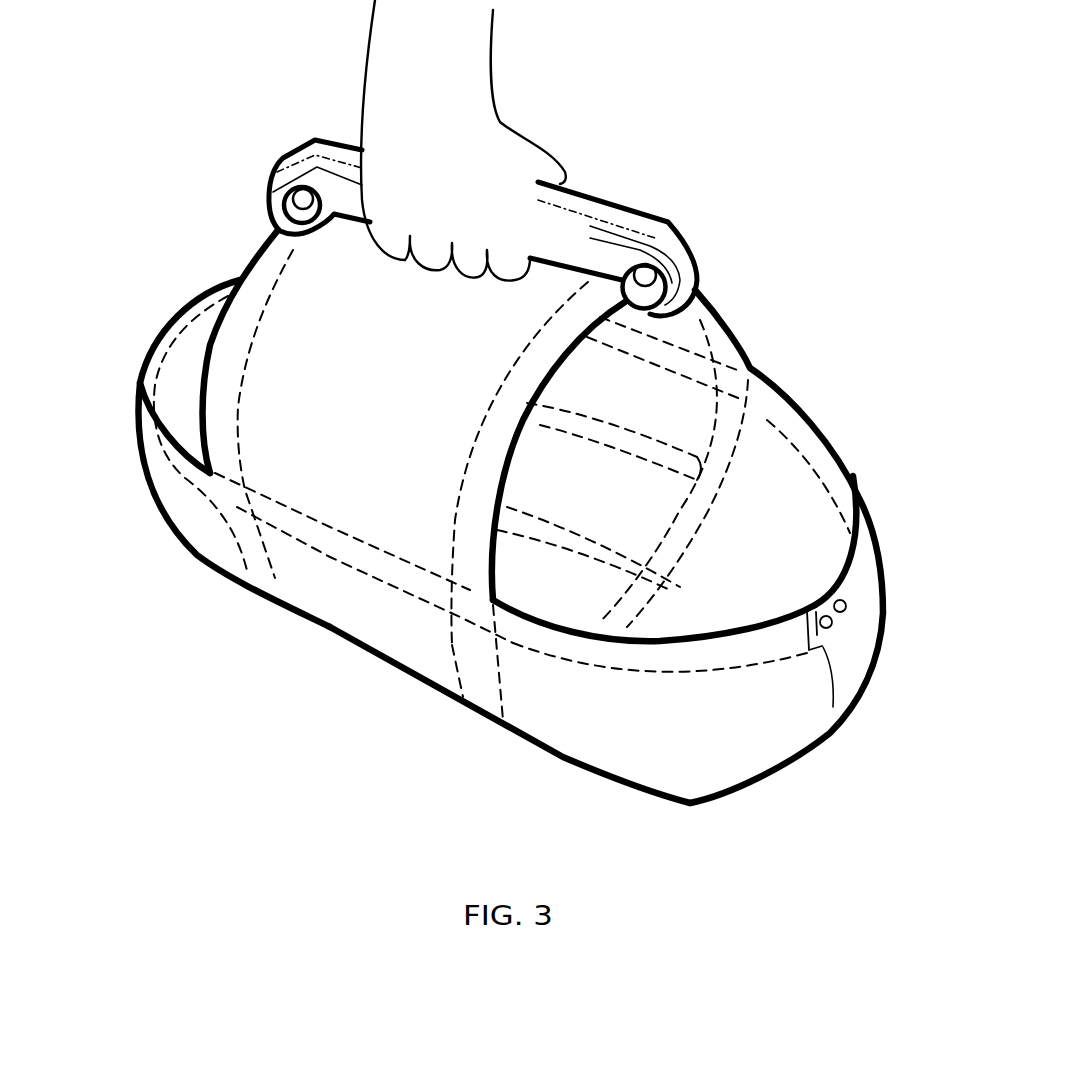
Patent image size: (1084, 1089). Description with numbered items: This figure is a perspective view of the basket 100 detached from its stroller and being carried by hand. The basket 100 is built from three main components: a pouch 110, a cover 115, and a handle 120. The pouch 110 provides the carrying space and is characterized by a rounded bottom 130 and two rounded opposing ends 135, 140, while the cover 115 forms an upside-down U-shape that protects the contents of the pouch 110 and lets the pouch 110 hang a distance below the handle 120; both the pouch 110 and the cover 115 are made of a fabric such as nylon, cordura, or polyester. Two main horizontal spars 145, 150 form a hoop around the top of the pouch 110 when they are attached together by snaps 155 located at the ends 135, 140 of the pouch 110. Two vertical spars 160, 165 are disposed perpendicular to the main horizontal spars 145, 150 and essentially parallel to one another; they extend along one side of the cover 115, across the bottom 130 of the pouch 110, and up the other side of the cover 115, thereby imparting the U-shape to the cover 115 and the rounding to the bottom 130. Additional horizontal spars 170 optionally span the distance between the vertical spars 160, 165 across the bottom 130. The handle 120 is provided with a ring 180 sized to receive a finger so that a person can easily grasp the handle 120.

The basket 100 is at (767, 763).
The pouch 110 is at (593, 733).
The cover 115 is at (300, 278).
The handle 120 is at (620, 207).
The bottom 130 is at (355, 673).
The end 135 is at (870, 729).
The end 140 is at (125, 324).
The main horizontal spar 145 is at (375, 563).
The main horizontal spar 150 is at (805, 430).
The snaps 155 is at (838, 620).
The vertical spar 160 is at (240, 548).
The vertical spar 165 is at (455, 695).
The additional horizontal spars 170 is at (585, 416).
The ring 180 is at (270, 200).